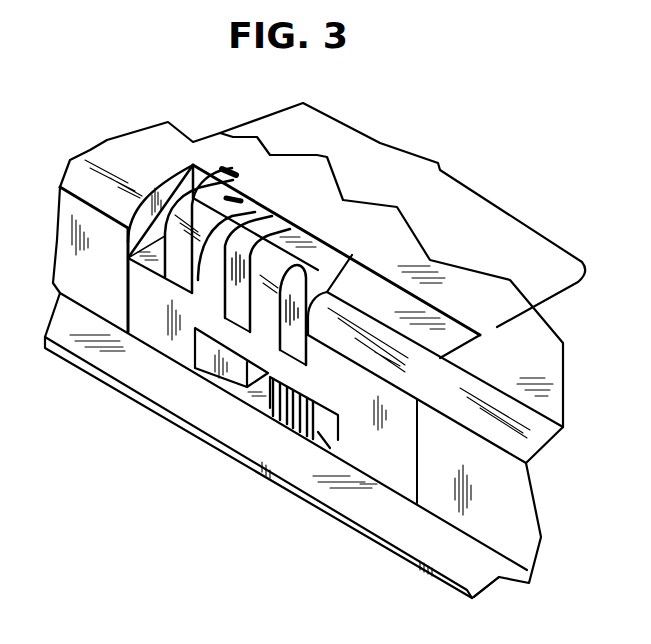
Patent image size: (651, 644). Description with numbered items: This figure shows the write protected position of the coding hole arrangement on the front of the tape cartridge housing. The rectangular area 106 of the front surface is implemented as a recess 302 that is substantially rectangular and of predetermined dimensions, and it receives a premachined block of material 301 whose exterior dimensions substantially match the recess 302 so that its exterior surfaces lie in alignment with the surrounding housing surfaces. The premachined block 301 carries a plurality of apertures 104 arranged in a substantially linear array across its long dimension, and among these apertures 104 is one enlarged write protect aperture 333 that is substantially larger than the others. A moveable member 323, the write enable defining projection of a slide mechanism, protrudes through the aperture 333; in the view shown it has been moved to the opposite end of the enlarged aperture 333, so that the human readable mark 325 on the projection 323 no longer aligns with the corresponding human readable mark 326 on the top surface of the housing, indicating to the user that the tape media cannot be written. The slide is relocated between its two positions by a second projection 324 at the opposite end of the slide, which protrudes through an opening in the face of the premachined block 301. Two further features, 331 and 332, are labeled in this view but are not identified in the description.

The apertures 104 is at (440, 167).
The rectangular area 106 is at (157, 328).
The premachined block of material 301 is at (420, 390).
The recess 302 is at (453, 320).
The moveable member 323 is at (170, 268).
The second projection 324 is at (275, 403).
The human readable mark 325 is at (233, 190).
The human readable mark 326 is at (228, 163).
The third arched cover 331 is at (317, 281).
The second arched cover 332 is at (260, 253).
The write protect aperture 333 is at (193, 165).